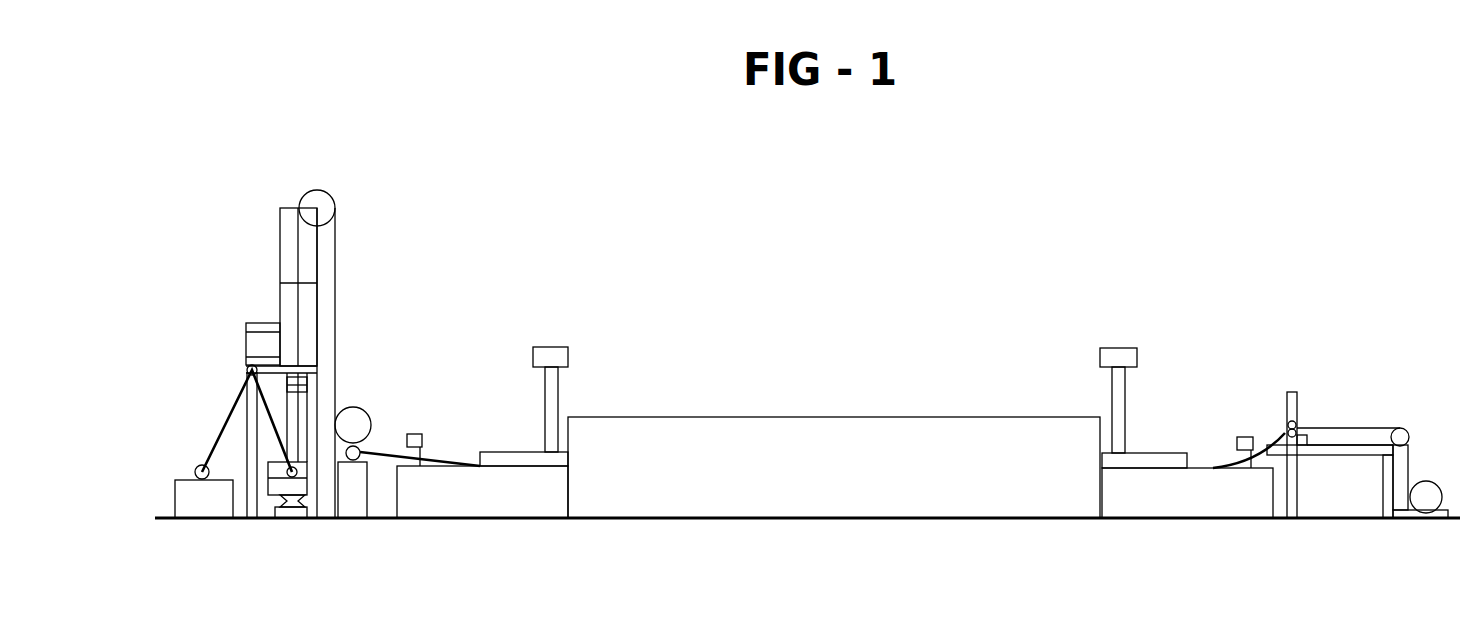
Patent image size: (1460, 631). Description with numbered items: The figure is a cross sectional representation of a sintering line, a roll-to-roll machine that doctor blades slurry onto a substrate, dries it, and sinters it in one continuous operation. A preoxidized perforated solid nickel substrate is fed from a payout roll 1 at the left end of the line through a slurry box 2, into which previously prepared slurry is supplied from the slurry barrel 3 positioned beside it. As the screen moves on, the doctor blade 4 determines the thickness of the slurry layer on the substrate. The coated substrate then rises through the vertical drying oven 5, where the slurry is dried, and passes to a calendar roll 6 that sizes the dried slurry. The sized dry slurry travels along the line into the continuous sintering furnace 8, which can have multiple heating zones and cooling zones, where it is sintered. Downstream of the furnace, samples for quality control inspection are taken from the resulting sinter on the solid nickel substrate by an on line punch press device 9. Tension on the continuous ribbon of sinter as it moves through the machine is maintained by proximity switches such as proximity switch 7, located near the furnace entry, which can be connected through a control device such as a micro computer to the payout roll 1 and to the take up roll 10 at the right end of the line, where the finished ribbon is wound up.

The payout roll 1 is at (198, 465).
The slurry box 2 is at (298, 475).
The slurry barrel 3 is at (258, 322).
The doctor blade 4 is at (303, 378).
The vertical drying oven 5 is at (284, 208).
The calendar roll 6 is at (359, 412).
The proximity switch 7 is at (424, 440).
The continuous sintering furnace 8 is at (834, 467).
The on line punch press device 9 is at (1285, 393).
The take up roll 10 is at (1433, 488).